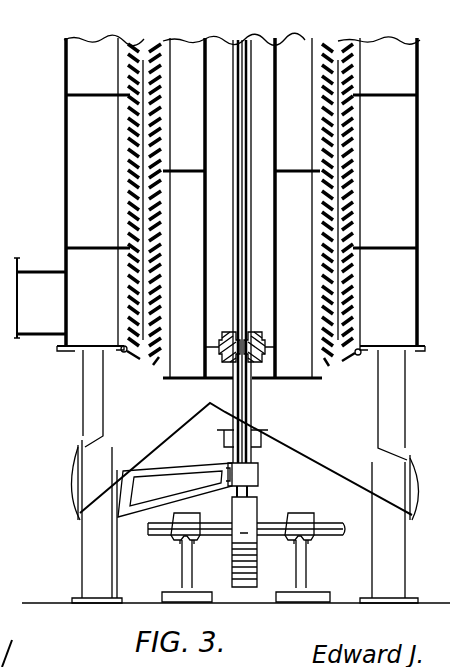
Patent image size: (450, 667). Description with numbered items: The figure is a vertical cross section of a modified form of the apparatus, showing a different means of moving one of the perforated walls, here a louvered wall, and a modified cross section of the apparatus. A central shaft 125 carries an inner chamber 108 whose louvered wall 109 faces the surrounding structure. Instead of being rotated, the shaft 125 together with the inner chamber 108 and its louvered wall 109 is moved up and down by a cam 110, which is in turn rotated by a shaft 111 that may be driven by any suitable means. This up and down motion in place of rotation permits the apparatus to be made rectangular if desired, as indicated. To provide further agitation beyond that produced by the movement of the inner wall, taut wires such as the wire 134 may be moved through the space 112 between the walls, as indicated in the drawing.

The inner chamber 108 is at (187, 113).
The louvered wall 109 is at (160, 142).
The cam 110 is at (258, 506).
The shaft 111 is at (328, 519).
The space 112 is at (337, 213).
The shaft 125 is at (143, 44).
The taut wire 134 is at (145, 233).